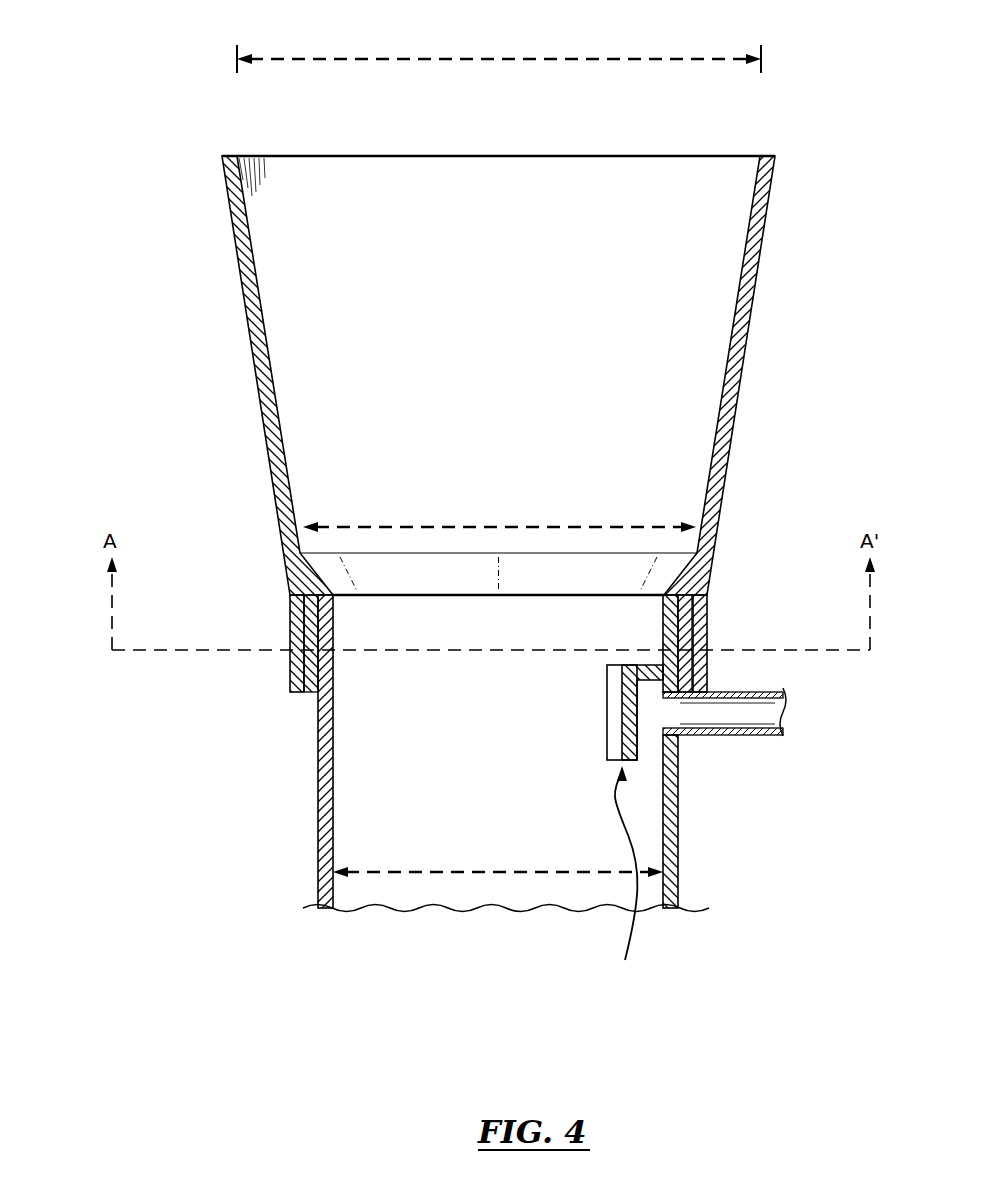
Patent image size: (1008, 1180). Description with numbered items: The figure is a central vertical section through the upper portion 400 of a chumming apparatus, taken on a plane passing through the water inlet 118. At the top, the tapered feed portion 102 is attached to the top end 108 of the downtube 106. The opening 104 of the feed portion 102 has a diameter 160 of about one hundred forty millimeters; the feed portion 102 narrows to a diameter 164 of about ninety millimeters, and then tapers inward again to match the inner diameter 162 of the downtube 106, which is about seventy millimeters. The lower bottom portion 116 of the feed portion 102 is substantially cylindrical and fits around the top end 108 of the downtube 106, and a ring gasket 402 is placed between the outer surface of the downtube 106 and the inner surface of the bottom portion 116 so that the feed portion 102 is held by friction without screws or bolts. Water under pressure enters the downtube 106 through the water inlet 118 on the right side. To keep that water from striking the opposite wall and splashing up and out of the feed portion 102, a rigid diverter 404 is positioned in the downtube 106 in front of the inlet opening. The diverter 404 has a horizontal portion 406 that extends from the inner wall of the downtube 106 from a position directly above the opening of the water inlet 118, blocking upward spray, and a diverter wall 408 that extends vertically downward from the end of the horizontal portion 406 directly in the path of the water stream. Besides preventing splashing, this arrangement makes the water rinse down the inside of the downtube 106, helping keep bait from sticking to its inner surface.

The upper portion 400 is at (83, 153).
The opening 104 is at (594, 144).
The feed portion 102 is at (250, 350).
The top end 108 is at (335, 612).
The bottom portion 116 is at (290, 617).
The ring gasket 402 is at (305, 693).
The downtube 106 is at (318, 806).
The water inlet 118 is at (740, 736).
The horizontal portion 406 is at (655, 660).
The diverter wall 408 is at (607, 716).
The diverter 404 is at (619, 880).
The diameter 160 is at (510, 57).
The diameter 164 is at (485, 525).
The inner diameter 162 is at (458, 873).